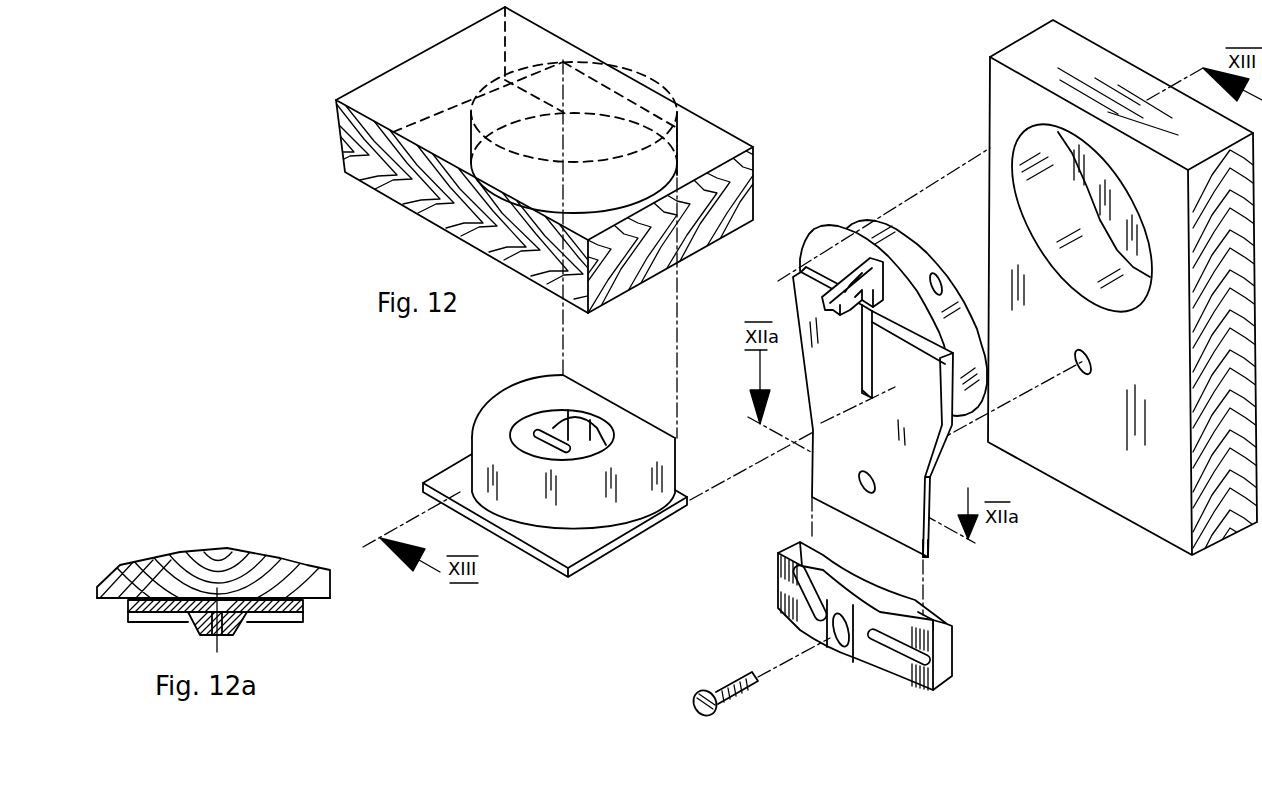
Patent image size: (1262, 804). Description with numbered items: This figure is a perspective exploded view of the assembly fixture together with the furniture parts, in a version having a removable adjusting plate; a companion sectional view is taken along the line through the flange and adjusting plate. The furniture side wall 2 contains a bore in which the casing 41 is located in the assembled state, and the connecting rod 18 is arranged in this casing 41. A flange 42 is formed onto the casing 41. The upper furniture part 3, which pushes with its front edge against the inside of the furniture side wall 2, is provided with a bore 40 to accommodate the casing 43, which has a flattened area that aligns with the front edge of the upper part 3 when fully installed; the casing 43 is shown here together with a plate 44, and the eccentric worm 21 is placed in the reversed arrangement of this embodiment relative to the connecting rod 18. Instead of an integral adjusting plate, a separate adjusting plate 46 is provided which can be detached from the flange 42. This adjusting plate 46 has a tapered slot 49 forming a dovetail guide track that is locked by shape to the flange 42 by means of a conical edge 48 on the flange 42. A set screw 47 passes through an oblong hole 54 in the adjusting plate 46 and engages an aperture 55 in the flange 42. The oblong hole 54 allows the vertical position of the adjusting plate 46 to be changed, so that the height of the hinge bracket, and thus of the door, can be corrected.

In FIG. 12, the furniture side wall 2 is at (990, 100).
In FIG. 12, the upper furniture part 3 is at (705, 128).
In FIG. 12, the connecting rod 18 is at (878, 262).
In FIG. 12, the eccentric worm 21 is at (603, 440).
In FIG. 12, the bore 40 is at (594, 160).
In FIG. 12, the casing 41 is at (926, 244).
In FIG. 12, the flange 42 is at (932, 460).
In FIG. 12, the casing 43 is at (668, 452).
In FIG. 12, the base plate 44 is at (583, 550).
In FIG. 12, the adjusting plate 46 is at (879, 666).
In FIG. 12, the set screw 47 is at (742, 697).
In FIG. 12, the conical edge 48 is at (930, 546).
In FIG. 12A, the conical edge 48 is at (153, 598).
In FIG. 12, the tapered slot 49 is at (925, 602).
In FIG. 12A, the tapered slot 49 is at (265, 620).
In FIG. 12, the oblong hole 54 is at (843, 655).
In FIG. 12, the aperture 55 is at (874, 480).